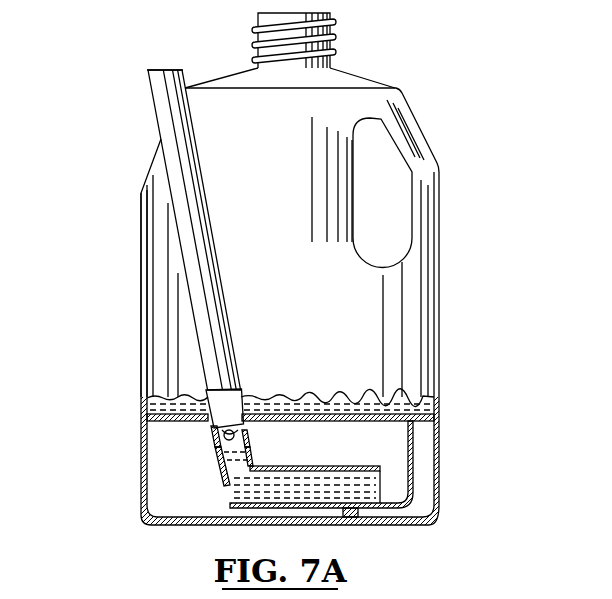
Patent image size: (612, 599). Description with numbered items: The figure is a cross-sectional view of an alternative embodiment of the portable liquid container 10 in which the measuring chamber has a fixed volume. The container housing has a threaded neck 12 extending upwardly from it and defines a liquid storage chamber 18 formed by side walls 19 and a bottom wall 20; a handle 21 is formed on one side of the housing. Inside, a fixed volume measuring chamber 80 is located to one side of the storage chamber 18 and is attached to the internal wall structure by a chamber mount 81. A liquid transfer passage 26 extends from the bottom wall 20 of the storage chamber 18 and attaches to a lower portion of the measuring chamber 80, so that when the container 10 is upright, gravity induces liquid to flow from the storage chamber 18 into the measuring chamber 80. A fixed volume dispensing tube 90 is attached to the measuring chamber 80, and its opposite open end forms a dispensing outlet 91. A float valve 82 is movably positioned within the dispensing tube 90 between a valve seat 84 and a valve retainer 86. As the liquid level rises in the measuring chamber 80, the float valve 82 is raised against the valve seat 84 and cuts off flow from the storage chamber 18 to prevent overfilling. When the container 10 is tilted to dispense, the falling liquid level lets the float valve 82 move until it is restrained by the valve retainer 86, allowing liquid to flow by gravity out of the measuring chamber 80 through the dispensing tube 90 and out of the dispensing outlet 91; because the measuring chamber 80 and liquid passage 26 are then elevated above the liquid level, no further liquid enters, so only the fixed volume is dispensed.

The portable liquid container 10 is at (457, 131).
The threaded neck 12 is at (329, 37).
The liquid storage chamber 18 is at (390, 403).
The side walls 19 is at (142, 304).
The bottom wall 20 is at (392, 417).
The handle 21 is at (413, 178).
The liquid transfer passage 26 is at (413, 463).
The fixed volume measuring chamber 80 is at (263, 492).
The chamber mount 81 is at (358, 514).
The float valve 82 is at (236, 436).
The valve seat 84 is at (221, 432).
The valve retainer 86 is at (221, 462).
The fixed volume dispensing tube 90 is at (226, 306).
The dispensing outlet 91 is at (157, 70).